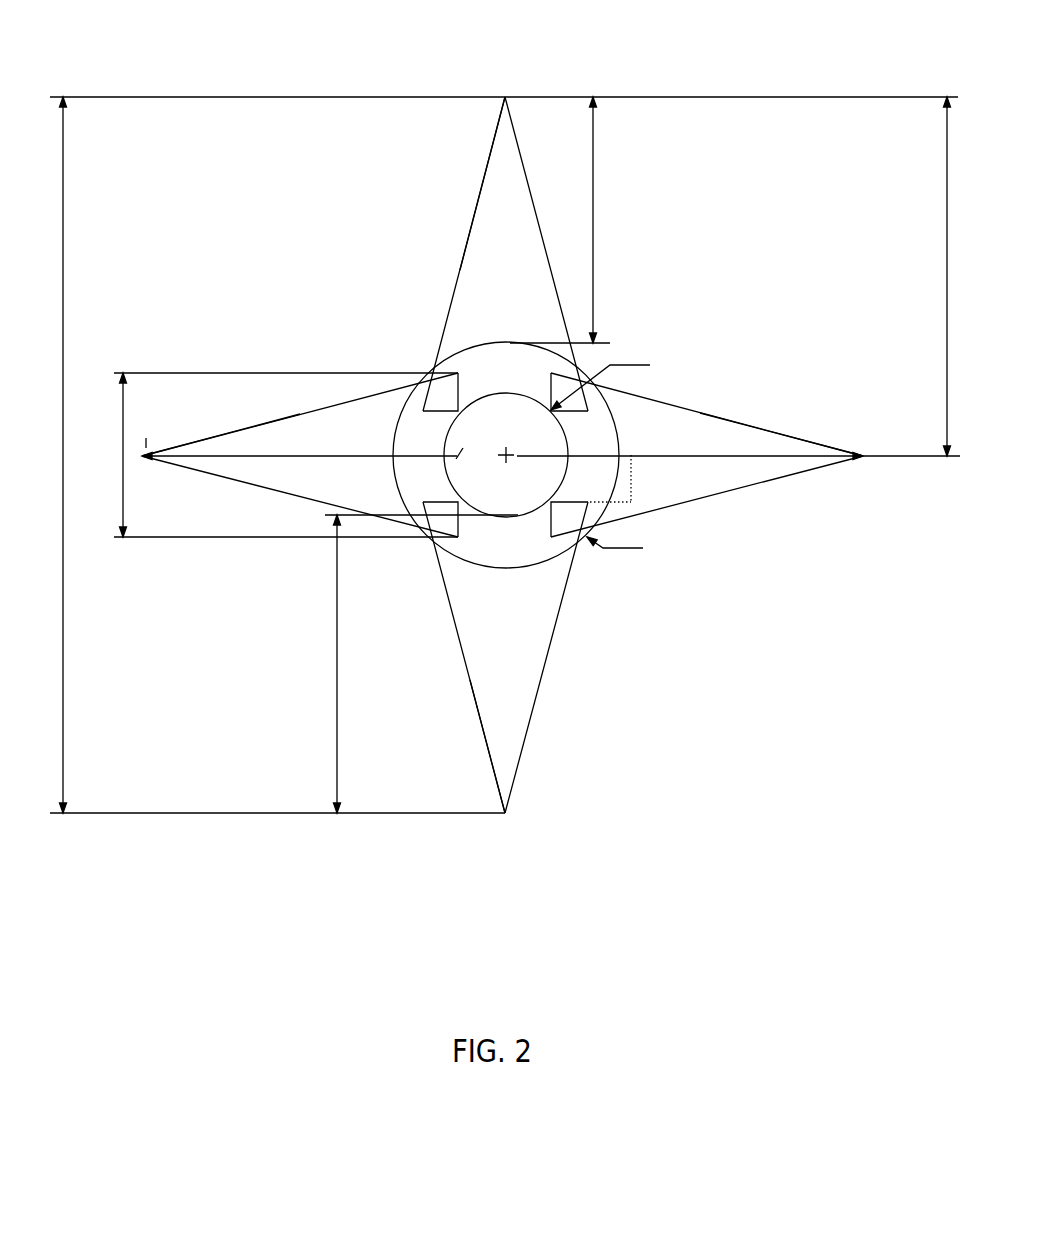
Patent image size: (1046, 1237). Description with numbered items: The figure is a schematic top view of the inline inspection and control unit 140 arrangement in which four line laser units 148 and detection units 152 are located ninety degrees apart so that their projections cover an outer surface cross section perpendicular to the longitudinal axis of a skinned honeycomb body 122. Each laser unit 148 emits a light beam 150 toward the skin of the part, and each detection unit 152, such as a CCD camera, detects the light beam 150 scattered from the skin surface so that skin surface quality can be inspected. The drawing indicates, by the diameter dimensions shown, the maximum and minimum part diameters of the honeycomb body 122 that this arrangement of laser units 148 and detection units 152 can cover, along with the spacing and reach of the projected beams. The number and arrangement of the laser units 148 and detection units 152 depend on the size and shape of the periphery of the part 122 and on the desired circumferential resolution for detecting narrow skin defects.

The inline inspection and control unit 140 is at (225, 28).
The laser unit 148 is at (517, 454).
The detection unit 152 is at (505, 86).
The light beam 150 is at (478, 328).
The skinned honeycomb body 122 is at (507, 516).